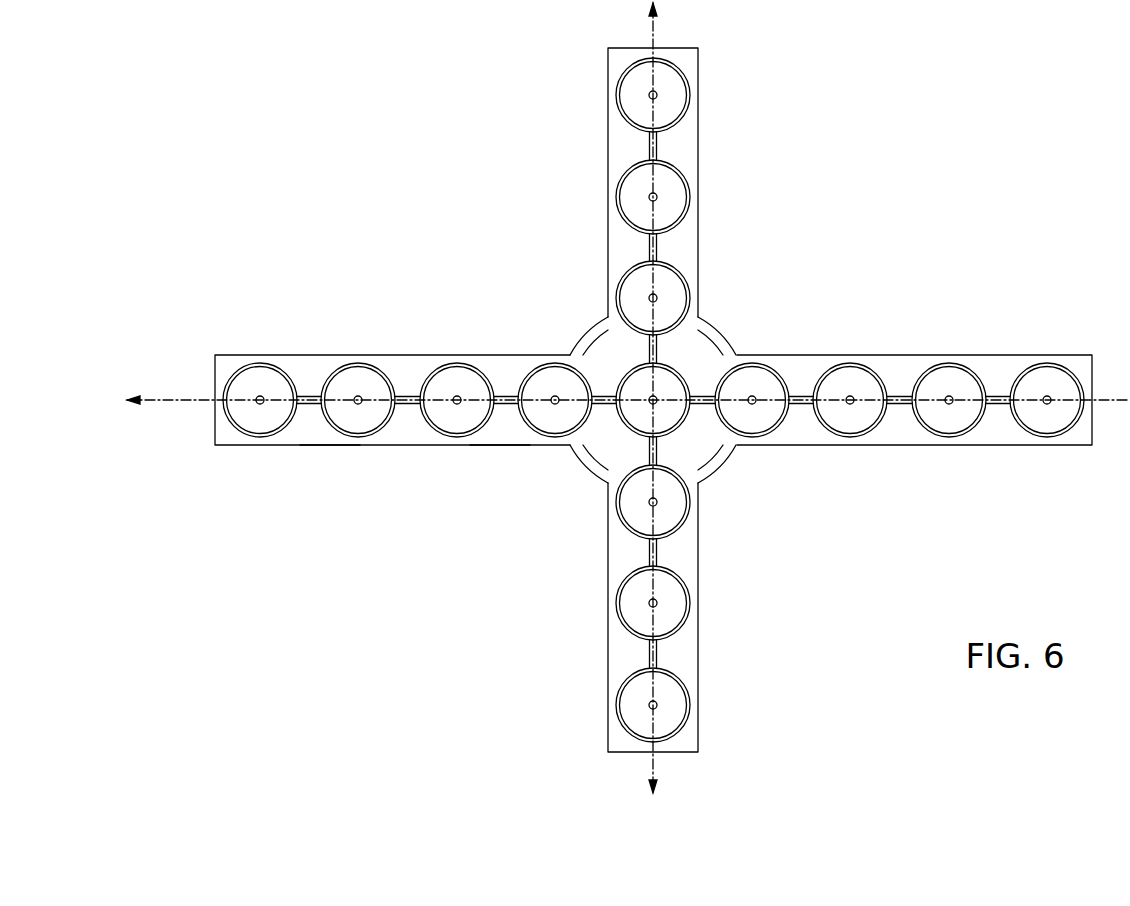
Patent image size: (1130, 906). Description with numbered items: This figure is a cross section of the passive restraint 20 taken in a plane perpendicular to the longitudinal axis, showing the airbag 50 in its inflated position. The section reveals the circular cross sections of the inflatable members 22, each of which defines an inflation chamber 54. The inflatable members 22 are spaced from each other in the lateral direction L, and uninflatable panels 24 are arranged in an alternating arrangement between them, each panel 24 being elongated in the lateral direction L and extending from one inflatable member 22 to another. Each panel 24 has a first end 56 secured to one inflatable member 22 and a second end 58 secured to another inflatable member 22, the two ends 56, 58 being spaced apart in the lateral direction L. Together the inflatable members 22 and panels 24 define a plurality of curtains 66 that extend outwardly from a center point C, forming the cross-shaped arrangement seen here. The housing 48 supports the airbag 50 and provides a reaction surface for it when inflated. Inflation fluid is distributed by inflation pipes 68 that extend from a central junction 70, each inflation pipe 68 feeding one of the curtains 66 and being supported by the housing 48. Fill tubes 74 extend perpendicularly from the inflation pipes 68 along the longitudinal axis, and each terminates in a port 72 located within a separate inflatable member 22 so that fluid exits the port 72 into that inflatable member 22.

The passive restraint 20 is at (373, 214).
The inflatable member 22 is at (621, 100).
The uninflatable panel 24 is at (650, 145).
The housing 48 is at (330, 447).
The airbag 50 is at (495, 447).
The inflation chamber 54 is at (665, 116).
The first end 56 is at (299, 397).
The second end 58 is at (319, 397).
The curtain 66 is at (688, 86).
The inflation pipe 68 is at (657, 147).
The central junction 70 is at (700, 460).
The port 72 is at (668, 106).
The fill tube 74 is at (657, 97).
The center point C is at (640, 415).
The lateral direction L is at (650, 765).